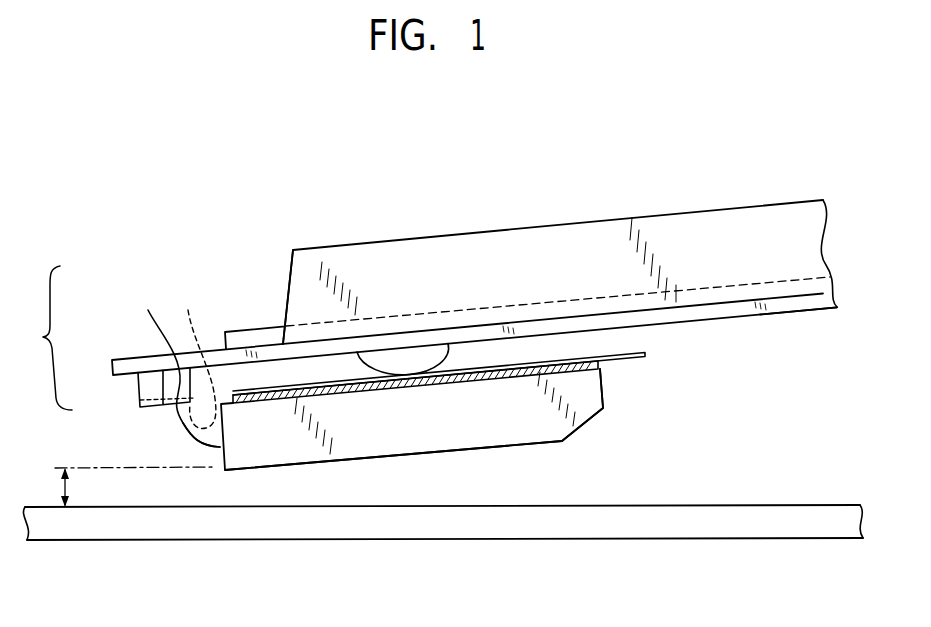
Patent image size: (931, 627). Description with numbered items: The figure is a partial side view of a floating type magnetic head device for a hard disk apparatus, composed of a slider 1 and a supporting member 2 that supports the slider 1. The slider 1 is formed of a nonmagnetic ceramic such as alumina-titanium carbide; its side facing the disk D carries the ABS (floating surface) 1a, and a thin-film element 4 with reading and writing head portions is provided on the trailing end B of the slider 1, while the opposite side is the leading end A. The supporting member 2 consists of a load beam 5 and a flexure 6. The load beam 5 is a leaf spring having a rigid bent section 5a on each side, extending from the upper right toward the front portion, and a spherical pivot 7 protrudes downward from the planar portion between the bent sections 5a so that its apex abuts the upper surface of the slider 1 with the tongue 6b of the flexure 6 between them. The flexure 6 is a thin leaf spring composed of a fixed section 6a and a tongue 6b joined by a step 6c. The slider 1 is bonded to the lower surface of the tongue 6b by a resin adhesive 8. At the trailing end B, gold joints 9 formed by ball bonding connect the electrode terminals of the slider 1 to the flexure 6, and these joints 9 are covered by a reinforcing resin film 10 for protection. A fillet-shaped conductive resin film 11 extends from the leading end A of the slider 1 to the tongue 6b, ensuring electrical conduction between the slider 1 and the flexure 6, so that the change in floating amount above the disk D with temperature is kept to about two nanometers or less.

The slider 1 is at (560, 437).
The ABS (floating surface) 1a is at (310, 463).
The supporting member 2 is at (49, 338).
The thin-film element 4 is at (208, 466).
The load beam 5 is at (447, 233).
The bent section 5a is at (303, 287).
The flexure 6 is at (731, 325).
The fixed section 6a is at (788, 312).
The tongue 6b is at (637, 358).
The step 6c is at (137, 393).
The spherical pivot 7 is at (425, 352).
The resin adhesive 8 is at (490, 373).
The joints 9 is at (199, 356).
The reinforcing resin film 10 is at (175, 366).
The conductive resin film 11 is at (605, 365).
The leading end A is at (607, 433).
The trailing end B is at (178, 444).
The disk D is at (568, 518).